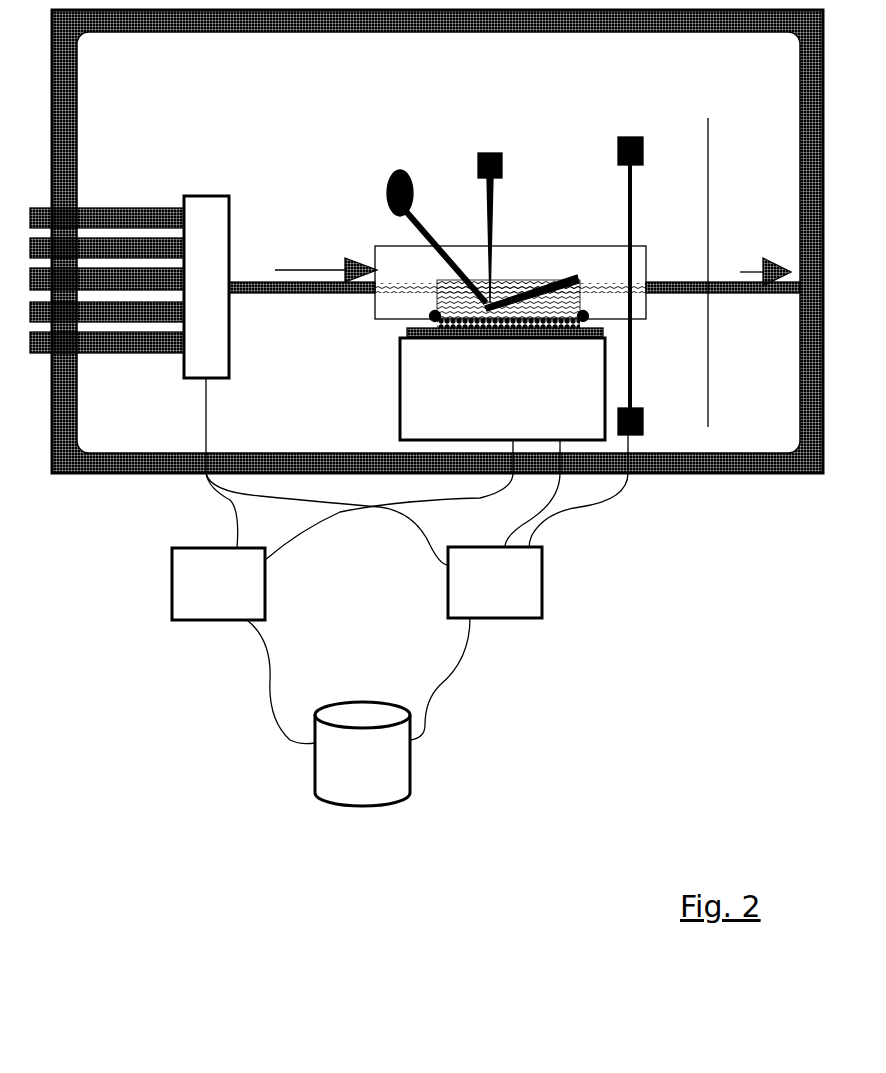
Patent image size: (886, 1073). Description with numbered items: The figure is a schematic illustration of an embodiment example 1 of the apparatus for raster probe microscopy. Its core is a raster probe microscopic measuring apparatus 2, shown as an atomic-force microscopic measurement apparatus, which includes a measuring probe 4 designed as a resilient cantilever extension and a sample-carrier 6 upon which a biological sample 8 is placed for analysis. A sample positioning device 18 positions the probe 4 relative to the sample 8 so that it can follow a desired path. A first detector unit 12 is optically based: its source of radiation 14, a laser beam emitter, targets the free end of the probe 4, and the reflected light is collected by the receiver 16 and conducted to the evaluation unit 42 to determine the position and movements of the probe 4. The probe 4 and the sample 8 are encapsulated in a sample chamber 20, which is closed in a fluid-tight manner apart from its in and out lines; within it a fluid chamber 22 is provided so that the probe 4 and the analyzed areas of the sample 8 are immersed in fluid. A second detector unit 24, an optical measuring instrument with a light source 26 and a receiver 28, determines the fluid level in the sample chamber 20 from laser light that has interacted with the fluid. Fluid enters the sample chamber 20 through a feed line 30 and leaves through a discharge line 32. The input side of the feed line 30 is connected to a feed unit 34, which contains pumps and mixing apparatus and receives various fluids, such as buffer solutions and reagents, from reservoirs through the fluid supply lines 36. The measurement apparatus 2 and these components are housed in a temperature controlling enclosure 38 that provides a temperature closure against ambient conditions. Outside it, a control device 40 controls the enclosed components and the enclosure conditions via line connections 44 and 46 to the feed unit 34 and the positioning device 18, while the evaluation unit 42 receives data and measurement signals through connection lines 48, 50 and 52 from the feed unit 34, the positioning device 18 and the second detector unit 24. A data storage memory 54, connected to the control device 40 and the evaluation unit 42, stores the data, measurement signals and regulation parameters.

The embodiment example 1 is at (680, 630).
The raster probe microscopic measuring apparatus 2 is at (553, 137).
The measuring probe 4 is at (533, 283).
The sample-carrier 6 is at (605, 325).
The biological sample 8 is at (400, 340).
The first detector unit 12 is at (418, 158).
The source of radiation 14 is at (492, 152).
The receiver 16 is at (388, 196).
The sample positioning device 18 is at (497, 422).
The sample chamber 20 is at (647, 258).
The fluid chamber 22 is at (584, 314).
The second detector unit 24 is at (643, 400).
The light source 26 is at (641, 137).
The receiver 28 is at (645, 425).
The feed line 30 is at (275, 295).
The discharge line 32 is at (733, 290).
The feed unit 34 is at (203, 210).
The fluid supply lines 36 is at (130, 208).
The temperature controlling enclosure 38 is at (728, 473).
The control device 40 is at (172, 612).
The evaluation unit 42 is at (542, 590).
The line connection 44 is at (215, 507).
The line connection 46 is at (303, 545).
The connection line 48 is at (417, 557).
The connection line 50 is at (508, 520).
The connection line 52 is at (547, 523).
The data storage memory 54 is at (335, 780).